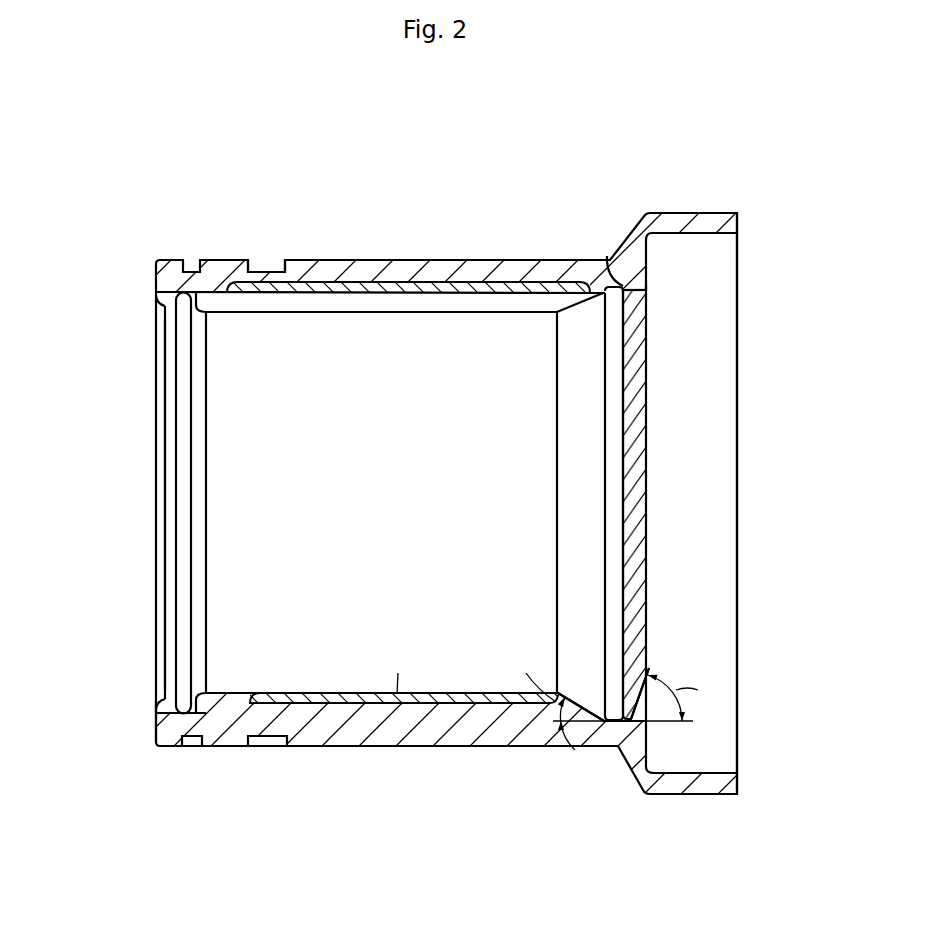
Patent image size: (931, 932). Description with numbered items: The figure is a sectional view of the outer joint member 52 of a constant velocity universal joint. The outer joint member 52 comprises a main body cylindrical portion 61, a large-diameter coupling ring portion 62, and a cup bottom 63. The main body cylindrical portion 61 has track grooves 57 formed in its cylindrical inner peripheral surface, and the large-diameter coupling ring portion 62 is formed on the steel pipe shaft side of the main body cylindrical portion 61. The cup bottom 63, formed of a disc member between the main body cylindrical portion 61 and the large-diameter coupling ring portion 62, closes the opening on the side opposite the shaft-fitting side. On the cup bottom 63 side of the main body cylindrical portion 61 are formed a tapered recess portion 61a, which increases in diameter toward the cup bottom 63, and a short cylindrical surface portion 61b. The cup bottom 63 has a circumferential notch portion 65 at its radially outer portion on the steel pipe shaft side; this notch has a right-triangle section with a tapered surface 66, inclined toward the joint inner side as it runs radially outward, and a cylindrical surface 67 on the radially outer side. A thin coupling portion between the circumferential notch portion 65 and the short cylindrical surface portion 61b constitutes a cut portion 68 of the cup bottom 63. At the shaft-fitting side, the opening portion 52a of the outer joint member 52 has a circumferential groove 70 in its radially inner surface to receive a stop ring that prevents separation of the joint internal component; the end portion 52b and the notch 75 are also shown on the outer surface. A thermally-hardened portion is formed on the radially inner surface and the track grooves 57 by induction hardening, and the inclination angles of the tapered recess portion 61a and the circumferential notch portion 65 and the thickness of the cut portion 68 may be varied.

The outer joint member 52 is at (435, 516).
The opening portion 52a is at (158, 629).
The end portion of connector body 52b is at (157, 718).
The track grooves 57 is at (437, 296).
The main body cylindrical portion 61 is at (408, 749).
The tapered recess portion 61a is at (572, 694).
The short cylindrical surface portion 61b is at (612, 707).
The large-diameter coupling ring portion 62 is at (698, 797).
The cup bottom 63 is at (650, 507).
The circumferential notch portion 65 is at (643, 295).
The tapered surface 66 is at (643, 295).
The cylindrical surface 67 is at (645, 289).
The cut portion 68 is at (613, 272).
The circumferential groove 70 is at (184, 704).
The notch 75 is at (268, 262).